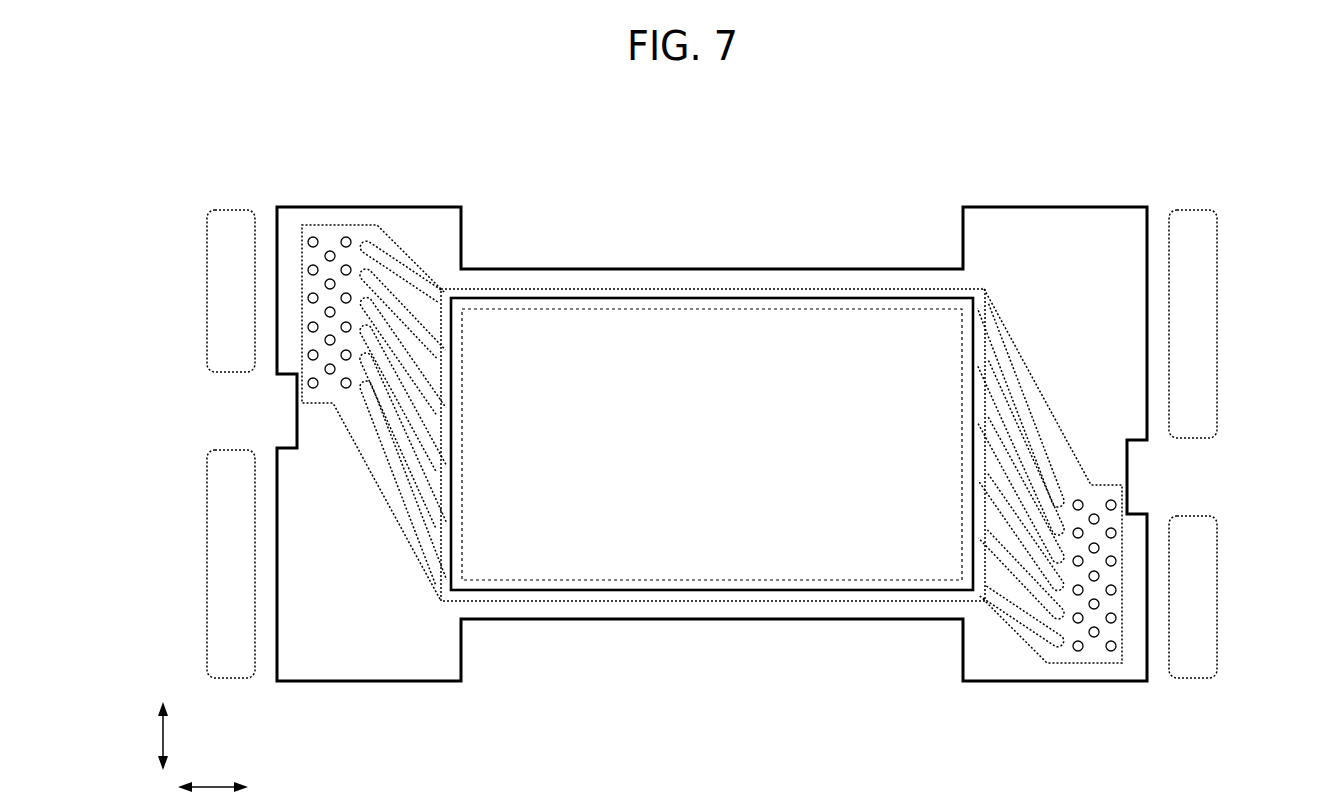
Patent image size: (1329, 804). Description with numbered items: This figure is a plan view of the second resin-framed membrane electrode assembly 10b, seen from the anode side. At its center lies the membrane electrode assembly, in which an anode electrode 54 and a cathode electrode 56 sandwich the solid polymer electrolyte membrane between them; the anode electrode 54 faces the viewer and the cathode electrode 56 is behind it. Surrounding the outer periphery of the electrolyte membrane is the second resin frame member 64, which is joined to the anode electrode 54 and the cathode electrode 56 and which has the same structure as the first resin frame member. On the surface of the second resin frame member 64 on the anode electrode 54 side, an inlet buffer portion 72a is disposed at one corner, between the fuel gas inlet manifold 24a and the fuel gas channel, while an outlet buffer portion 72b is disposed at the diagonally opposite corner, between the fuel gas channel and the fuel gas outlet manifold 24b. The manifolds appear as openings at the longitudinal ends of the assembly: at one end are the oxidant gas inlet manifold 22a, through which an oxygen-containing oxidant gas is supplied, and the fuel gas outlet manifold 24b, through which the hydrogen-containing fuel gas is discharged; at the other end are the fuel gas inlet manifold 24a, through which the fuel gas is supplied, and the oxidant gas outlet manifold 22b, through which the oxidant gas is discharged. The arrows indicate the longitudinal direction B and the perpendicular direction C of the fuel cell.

The second resin-framed membrane electrode assembly 10b is at (780, 96).
The second resin frame member 64 is at (984, 207).
The anode electrode 54 is at (552, 327).
The cathode electrode 56 is at (624, 327).
The inlet buffer portion 72a is at (408, 237).
The outlet buffer portion 72b is at (1018, 655).
The oxidant gas inlet manifold 22a is at (1200, 311).
The oxidant gas outlet manifold 22b is at (222, 618).
The fuel gas inlet manifold 24a is at (222, 311).
The fuel gas outlet manifold 24b is at (1200, 618).